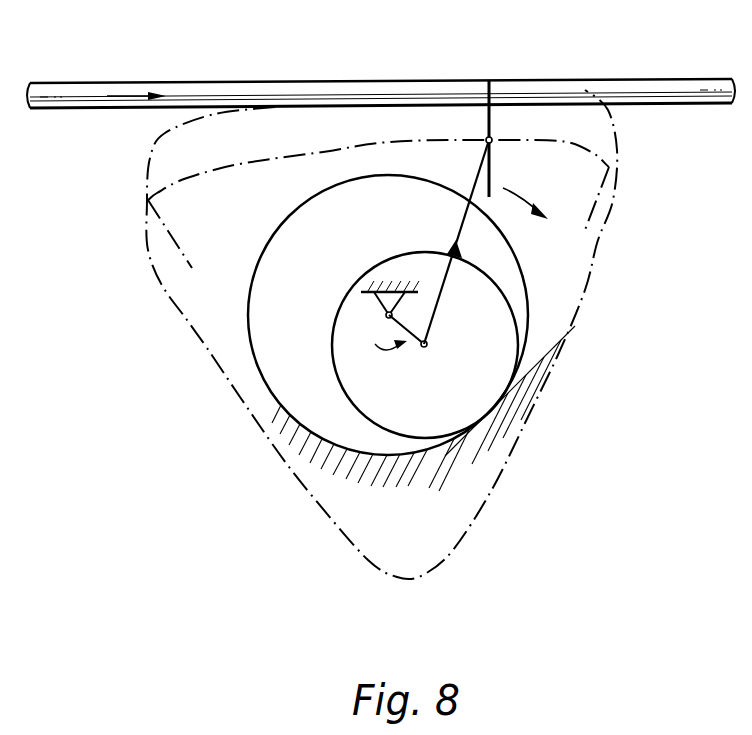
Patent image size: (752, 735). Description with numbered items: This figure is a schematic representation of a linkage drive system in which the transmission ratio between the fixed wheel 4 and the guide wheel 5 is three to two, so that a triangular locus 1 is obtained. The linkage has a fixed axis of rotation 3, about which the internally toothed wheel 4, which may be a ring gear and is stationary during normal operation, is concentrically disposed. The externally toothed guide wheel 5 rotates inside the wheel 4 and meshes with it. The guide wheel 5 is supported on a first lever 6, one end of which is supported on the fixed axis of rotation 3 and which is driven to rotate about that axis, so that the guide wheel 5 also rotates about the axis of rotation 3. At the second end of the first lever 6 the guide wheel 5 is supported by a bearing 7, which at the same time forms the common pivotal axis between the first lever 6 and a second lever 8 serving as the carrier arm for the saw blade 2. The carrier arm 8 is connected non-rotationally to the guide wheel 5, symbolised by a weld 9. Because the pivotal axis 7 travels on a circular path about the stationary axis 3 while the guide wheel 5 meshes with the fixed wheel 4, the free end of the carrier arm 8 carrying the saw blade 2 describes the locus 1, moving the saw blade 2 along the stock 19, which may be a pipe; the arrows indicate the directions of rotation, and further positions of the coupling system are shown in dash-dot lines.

The locus 1 is at (593, 277).
The saw blade 2 is at (491, 118).
The fixed axis of rotation 3 is at (383, 320).
The internally toothed wheel 4 is at (527, 273).
The guide wheel 5 is at (335, 367).
The first lever 6 is at (407, 326).
The bearing 7 is at (422, 348).
The second lever 8 is at (460, 233).
The weld 9 is at (448, 252).
The stock 19 is at (85, 90).